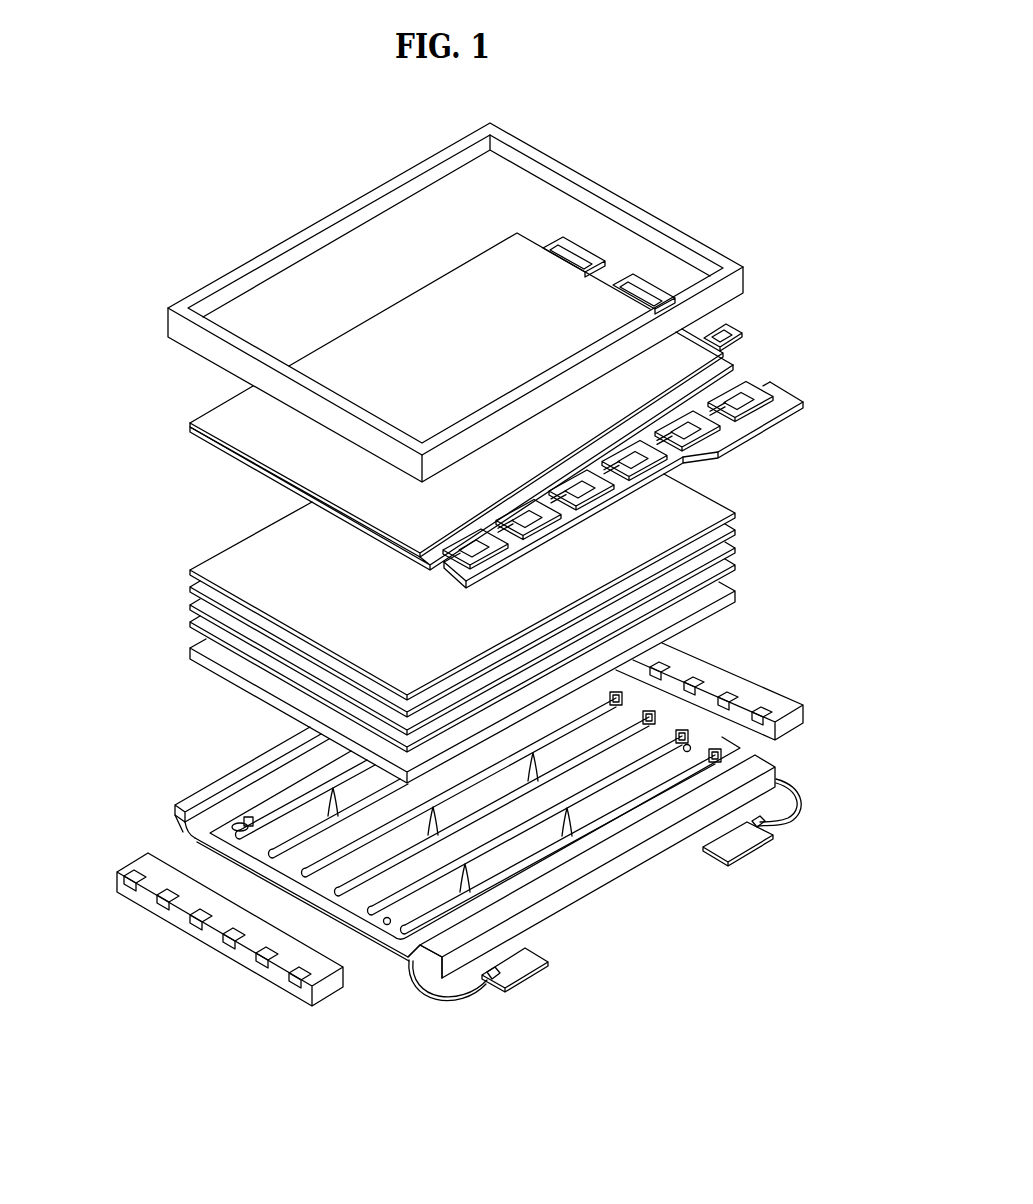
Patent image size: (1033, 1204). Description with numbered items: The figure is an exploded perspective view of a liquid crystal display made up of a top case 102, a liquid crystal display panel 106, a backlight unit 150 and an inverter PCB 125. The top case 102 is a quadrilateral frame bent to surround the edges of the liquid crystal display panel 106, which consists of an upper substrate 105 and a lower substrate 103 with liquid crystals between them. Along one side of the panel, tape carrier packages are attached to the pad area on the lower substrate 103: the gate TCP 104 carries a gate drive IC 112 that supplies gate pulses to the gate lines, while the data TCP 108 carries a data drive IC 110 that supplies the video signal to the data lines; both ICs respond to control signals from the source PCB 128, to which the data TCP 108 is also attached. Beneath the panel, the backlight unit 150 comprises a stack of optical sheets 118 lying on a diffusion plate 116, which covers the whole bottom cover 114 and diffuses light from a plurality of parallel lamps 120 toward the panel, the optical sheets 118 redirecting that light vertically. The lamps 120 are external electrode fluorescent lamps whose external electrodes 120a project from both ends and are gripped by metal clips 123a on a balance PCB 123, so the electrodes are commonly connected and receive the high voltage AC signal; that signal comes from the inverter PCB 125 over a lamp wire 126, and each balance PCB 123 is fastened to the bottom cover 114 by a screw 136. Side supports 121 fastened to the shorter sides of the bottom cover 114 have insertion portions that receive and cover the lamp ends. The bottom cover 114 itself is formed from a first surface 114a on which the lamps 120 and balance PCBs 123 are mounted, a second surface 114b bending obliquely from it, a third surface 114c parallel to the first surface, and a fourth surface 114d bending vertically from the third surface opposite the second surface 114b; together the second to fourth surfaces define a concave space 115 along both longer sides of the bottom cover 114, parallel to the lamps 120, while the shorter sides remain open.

The top case 102 is at (692, 243).
The gate TCP 104 is at (585, 251).
The gate drive IC 112 is at (563, 249).
The liquid crystal display panel 106 is at (128, 407).
The upper substrate 105 is at (189, 423).
The lower substrate 103 is at (189, 430).
The data TCP 108 is at (760, 389).
The data drive IC 110 is at (742, 397).
The source PCB 128 is at (790, 400).
The optical sheets 118 is at (743, 507).
The diffusion plate 116 is at (740, 591).
The backlight unit 150 is at (770, 629).
The bottom cover 114 is at (66, 774).
The first surface 114a is at (200, 843).
The second surface 114b is at (195, 821).
The third surface 114c is at (188, 798).
The fourth surface 114d is at (178, 816).
The concave space 115 is at (429, 966).
The lamps 120 is at (300, 797).
The external electrodes 120a is at (247, 820).
The side supports 121 is at (213, 940).
The balance PCB 123 is at (317, 883).
The metal clips 123a is at (235, 825).
The inverter PCB 125 is at (520, 968).
The lamp wire 126 is at (485, 987).
The screw 136 is at (386, 925).